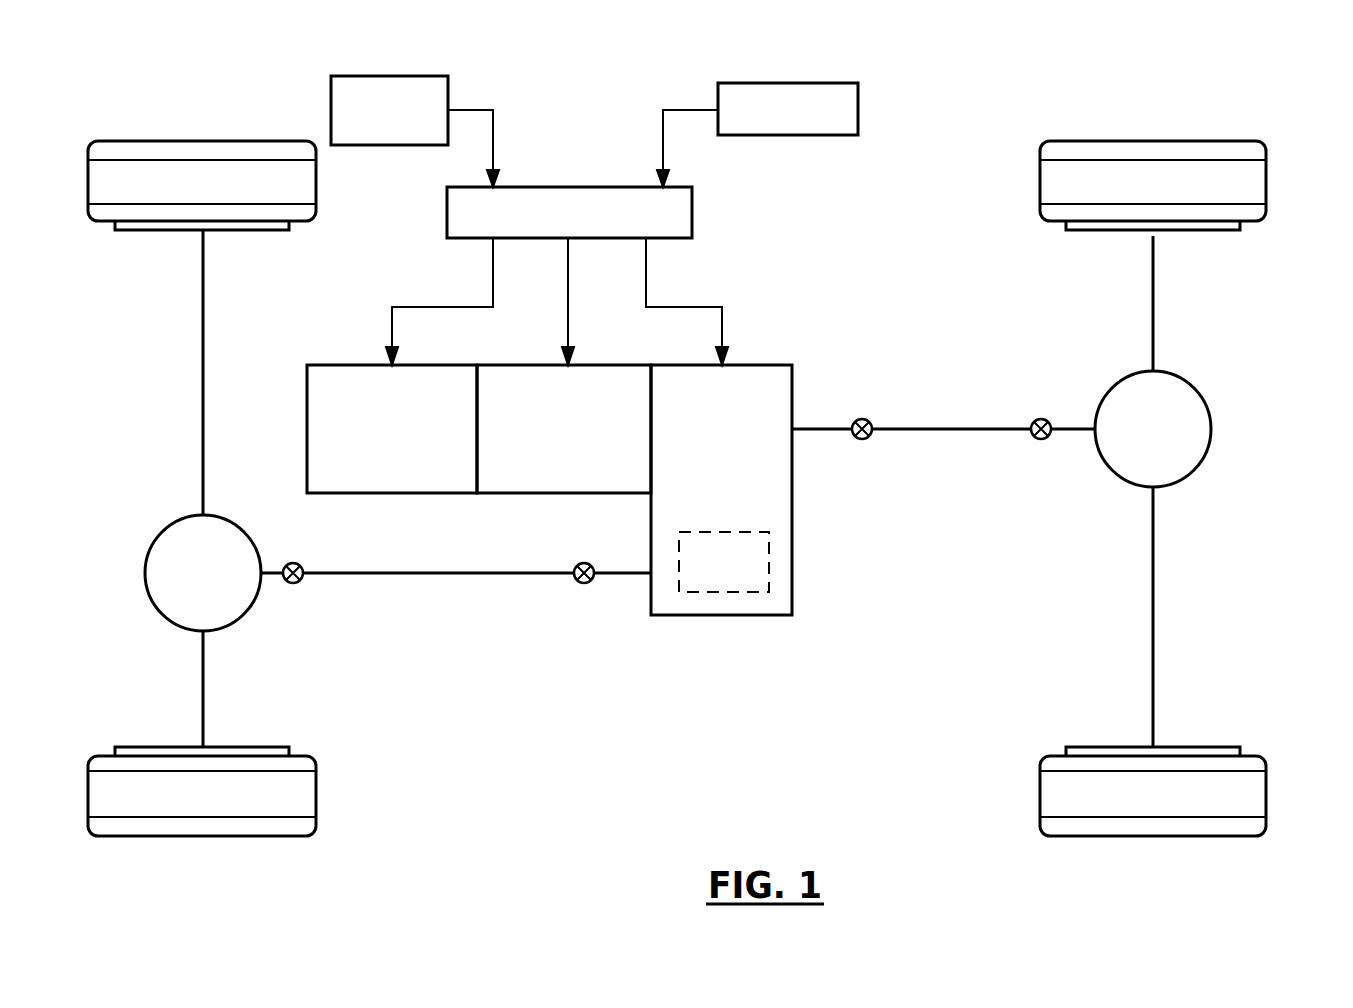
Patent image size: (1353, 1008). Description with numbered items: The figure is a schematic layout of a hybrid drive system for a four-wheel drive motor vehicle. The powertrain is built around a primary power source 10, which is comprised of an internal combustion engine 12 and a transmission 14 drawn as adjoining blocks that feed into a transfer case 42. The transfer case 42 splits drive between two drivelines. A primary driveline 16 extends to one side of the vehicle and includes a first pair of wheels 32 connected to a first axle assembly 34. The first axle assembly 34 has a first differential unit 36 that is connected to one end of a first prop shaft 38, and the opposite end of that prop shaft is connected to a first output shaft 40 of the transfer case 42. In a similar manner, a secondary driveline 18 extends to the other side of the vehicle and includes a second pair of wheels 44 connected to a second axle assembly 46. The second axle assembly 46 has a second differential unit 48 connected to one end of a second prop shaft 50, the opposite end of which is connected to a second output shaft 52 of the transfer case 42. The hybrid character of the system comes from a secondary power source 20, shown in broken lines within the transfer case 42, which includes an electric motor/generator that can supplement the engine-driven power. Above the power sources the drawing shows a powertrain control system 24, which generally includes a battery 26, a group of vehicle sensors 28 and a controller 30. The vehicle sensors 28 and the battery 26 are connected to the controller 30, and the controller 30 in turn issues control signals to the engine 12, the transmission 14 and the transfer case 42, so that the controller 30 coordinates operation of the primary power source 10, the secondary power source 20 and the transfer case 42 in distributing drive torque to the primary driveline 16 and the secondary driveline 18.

The primary power source 10 is at (344, 325).
The internal combustion engine 12 is at (392, 493).
The transmission 14 is at (545, 493).
The primary driveline 16 is at (943, 528).
The secondary driveline 18 is at (456, 637).
The secondary power source 20 is at (772, 565).
The powertrain control system 24 is at (628, 197).
The battery 26 is at (858, 110).
The vehicle sensors 28 is at (371, 76).
The controller 30 is at (692, 212).
The first pair of wheels 32 is at (1266, 181).
The first axle assembly 34 is at (1155, 607).
The first differential unit 36 is at (1187, 448).
The first prop shaft 38 is at (993, 430).
The first output shaft 40 is at (835, 428).
The transfer case 42 is at (765, 477).
The second pair of wheels 44 is at (316, 181).
The second axle assembly 46 is at (200, 357).
The second differential unit 48 is at (143, 573).
The second prop shaft 50 is at (476, 575).
The second output shaft 52 is at (625, 575).